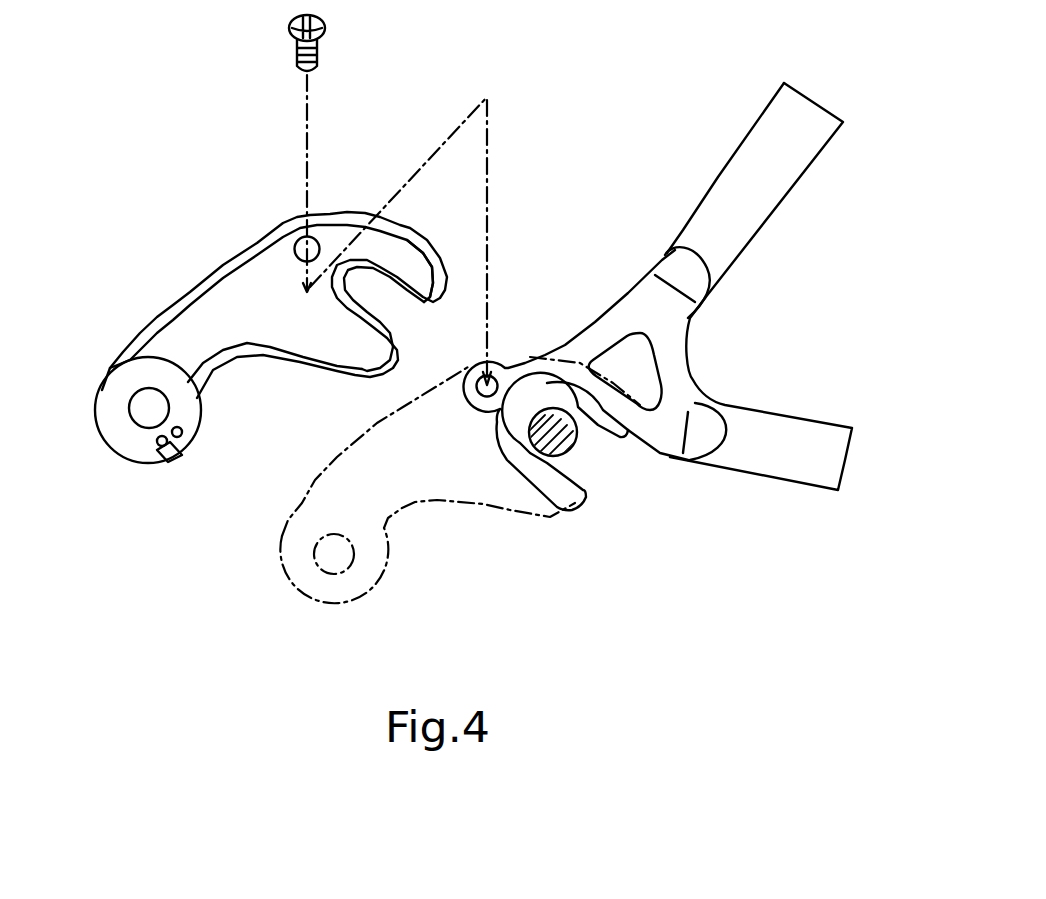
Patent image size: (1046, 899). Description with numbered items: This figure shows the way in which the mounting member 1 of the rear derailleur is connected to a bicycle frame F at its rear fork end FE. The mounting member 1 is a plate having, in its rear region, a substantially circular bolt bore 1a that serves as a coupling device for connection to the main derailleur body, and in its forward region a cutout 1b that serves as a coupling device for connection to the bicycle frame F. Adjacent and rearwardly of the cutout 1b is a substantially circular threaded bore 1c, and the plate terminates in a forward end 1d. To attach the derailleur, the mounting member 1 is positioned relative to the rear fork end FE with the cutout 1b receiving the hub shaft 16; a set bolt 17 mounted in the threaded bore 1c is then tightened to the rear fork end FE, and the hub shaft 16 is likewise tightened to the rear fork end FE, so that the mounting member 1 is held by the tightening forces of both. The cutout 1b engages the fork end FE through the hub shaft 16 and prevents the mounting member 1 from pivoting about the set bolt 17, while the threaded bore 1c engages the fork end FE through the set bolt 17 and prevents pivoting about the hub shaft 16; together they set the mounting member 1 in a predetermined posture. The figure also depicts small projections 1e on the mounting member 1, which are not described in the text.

The mounting member 1 is at (223, 262).
The bolt bore 1a is at (143, 414).
The cutout 1b is at (377, 330).
The threaded bore 1c is at (316, 242).
The forward end 1d is at (446, 278).
The positioning projections 1e is at (185, 449).
The hub shaft 16 is at (563, 430).
The set bolt 17 is at (327, 32).
The bicycle frame F is at (718, 177).
The rear fork end FE is at (352, 282).